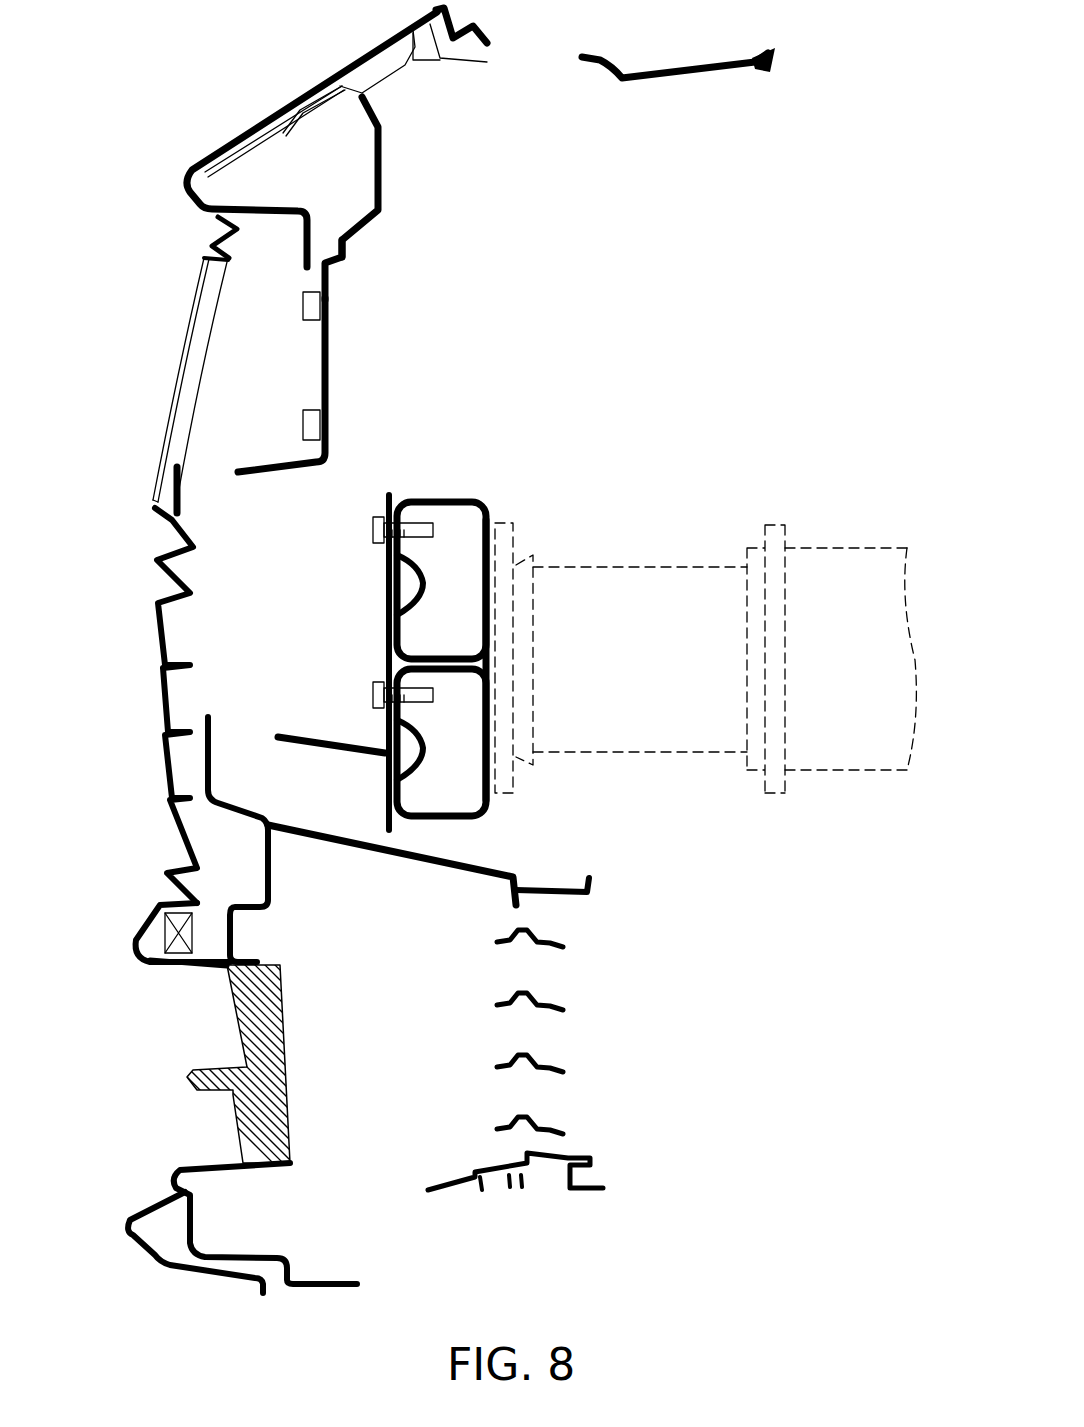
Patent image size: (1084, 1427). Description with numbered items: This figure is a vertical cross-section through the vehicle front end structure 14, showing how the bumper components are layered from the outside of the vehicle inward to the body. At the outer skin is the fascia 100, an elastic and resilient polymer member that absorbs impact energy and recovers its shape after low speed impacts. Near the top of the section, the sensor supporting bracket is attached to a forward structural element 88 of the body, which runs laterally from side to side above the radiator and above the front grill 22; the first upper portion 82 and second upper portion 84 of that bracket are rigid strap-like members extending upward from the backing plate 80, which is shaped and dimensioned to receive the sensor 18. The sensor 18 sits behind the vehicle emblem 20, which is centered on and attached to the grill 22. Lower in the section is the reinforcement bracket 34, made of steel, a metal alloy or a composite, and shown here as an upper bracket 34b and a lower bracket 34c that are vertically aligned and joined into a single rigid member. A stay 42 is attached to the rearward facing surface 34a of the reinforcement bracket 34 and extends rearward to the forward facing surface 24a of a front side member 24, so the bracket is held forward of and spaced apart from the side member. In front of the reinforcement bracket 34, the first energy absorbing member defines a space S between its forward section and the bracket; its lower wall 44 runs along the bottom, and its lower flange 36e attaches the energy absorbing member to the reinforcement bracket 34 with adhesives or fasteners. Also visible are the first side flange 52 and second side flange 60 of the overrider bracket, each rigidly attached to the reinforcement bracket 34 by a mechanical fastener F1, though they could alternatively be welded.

The vehicle front end structure 14 is at (228, 54).
The sensor 18 is at (358, 234).
The vehicle emblem 20 is at (180, 345).
The front grill 22 is at (158, 630).
The front side member 24 is at (849, 600).
The forward facing surface 24a is at (783, 706).
The reinforcement bracket 34 is at (450, 490).
The rearward facing surface 34a is at (490, 568).
The upper bracket 34b is at (425, 498).
The lower bracket 34c is at (490, 755).
The lower flange 36e is at (385, 800).
The stay 42 is at (632, 612).
The lower wall 44 is at (330, 737).
The first side flange 52 is at (387, 583).
The second side flange 60 is at (343, 662).
The backing plate 80 is at (328, 362).
The first upper portion 82 is at (380, 165).
The second upper portion 84 is at (420, 198).
The forward structural element 88 is at (350, 88).
The fascia 100 is at (215, 148).
The space S is at (290, 773).
The mechanical fastener F1 is at (433, 535).